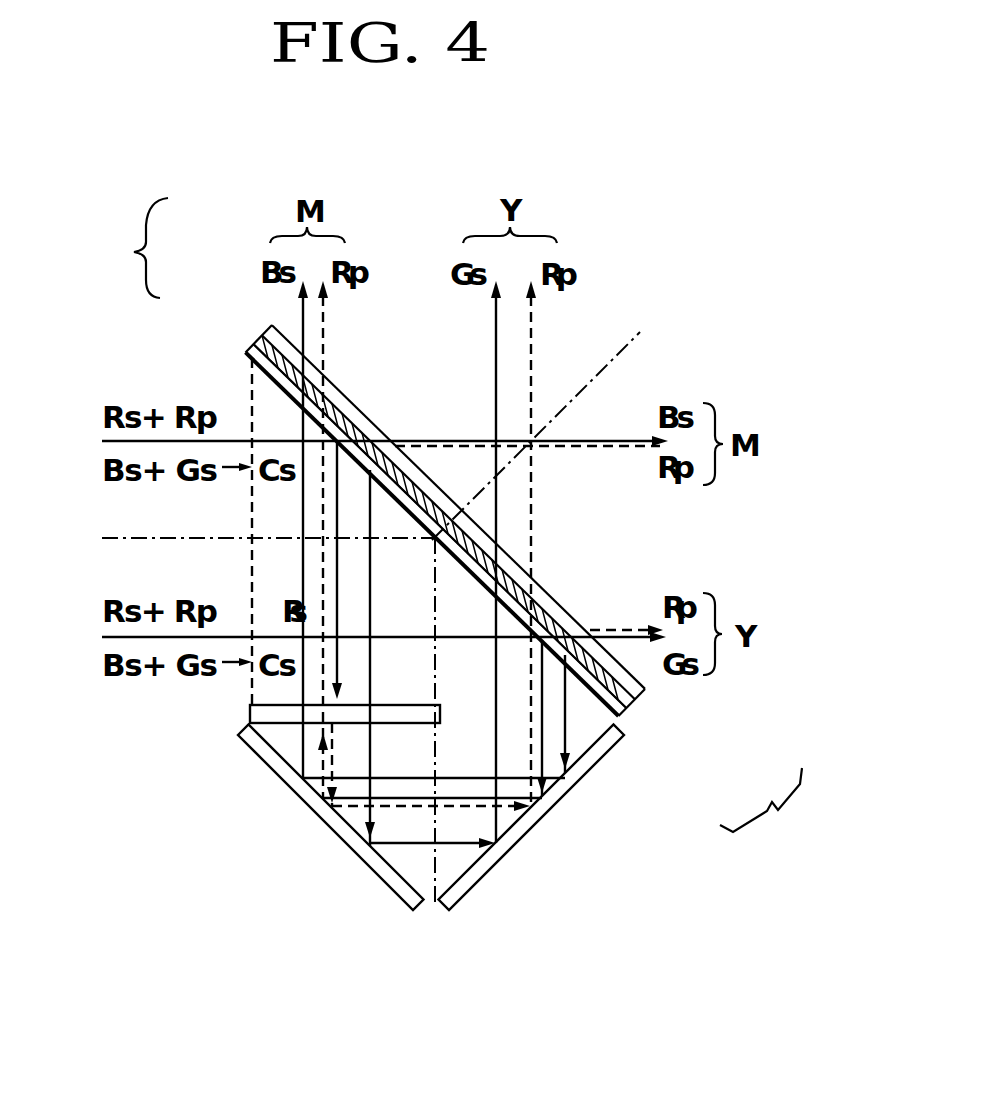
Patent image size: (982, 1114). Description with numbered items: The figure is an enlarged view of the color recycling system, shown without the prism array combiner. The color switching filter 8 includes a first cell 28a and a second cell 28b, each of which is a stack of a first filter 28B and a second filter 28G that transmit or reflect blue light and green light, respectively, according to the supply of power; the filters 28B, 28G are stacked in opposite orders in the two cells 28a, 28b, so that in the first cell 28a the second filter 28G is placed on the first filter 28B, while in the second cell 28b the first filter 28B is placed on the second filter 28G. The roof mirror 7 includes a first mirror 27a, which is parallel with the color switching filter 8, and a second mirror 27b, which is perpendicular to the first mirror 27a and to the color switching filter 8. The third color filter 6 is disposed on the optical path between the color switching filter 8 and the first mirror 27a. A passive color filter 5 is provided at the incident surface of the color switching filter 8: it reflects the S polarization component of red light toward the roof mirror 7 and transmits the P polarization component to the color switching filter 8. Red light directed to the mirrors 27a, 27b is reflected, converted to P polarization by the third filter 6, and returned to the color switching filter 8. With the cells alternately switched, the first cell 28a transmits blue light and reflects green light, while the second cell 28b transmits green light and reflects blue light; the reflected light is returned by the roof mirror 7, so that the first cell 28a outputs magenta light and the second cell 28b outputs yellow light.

The passive color filter 5 is at (250, 358).
The third color filter 6 is at (250, 715).
The roof mirror 7 is at (553, 975).
The color switching filter 8 is at (370, 406).
The first mirror 27a is at (383, 867).
The second mirror 27b is at (503, 855).
The first cell 28a is at (121, 248).
The second cell 28b is at (771, 812).
The first filter 28B is at (260, 353).
The second filter 28G is at (277, 327).